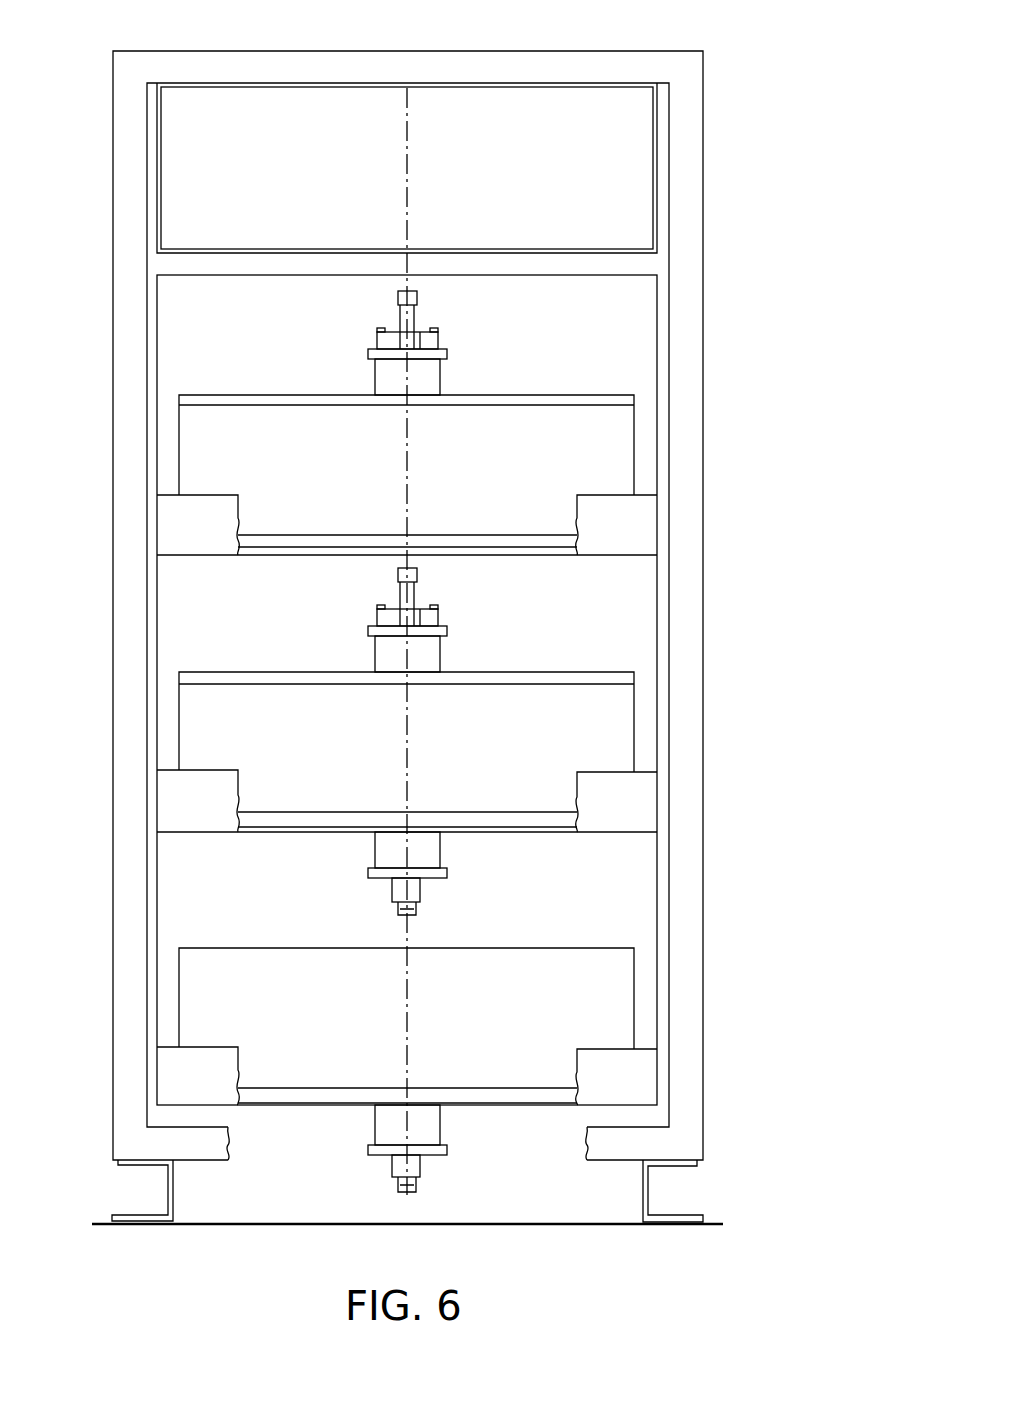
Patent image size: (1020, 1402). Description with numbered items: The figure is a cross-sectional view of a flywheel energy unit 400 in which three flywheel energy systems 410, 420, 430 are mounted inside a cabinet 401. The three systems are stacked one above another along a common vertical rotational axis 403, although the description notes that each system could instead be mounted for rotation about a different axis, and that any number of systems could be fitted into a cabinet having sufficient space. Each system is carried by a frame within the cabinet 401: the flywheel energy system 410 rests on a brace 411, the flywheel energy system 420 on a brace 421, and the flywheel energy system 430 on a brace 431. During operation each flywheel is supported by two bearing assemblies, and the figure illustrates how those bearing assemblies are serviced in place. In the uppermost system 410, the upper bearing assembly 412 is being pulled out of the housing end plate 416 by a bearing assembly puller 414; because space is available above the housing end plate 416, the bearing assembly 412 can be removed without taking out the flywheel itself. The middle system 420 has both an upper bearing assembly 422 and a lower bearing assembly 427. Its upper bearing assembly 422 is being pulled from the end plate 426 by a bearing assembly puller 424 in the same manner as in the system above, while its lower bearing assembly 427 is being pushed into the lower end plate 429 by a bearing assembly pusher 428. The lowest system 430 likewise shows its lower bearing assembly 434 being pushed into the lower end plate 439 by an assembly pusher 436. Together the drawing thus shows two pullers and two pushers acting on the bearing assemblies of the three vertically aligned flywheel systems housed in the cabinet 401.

The flywheel energy unit 400 is at (740, 156).
The cabinet 401 is at (440, 51).
The common vertical rotational axis 403 is at (407, 170).
The flywheel energy system 410 is at (637, 440).
The brace 411 is at (222, 542).
The upper bearing assembly 412 is at (447, 353).
The bearing assembly puller 414 is at (445, 310).
The housing end plate 416 is at (262, 402).
The flywheel energy system 420 is at (637, 737).
The brace 421 is at (222, 819).
The upper bearing assembly 422 is at (447, 630).
The bearing assembly puller 424 is at (445, 587).
The end plate 426 is at (262, 679).
The lower bearing assembly 427 is at (447, 873).
The bearing assembly pusher 428 is at (438, 897).
The lower end plate 429 is at (558, 822).
The flywheel energy system 430 is at (637, 997).
The brace 431 is at (222, 1095).
The lower bearing assembly 434 is at (447, 1150).
The bearing assembly pusher 436 is at (438, 1178).
The lower end plate 439 is at (542, 1097).